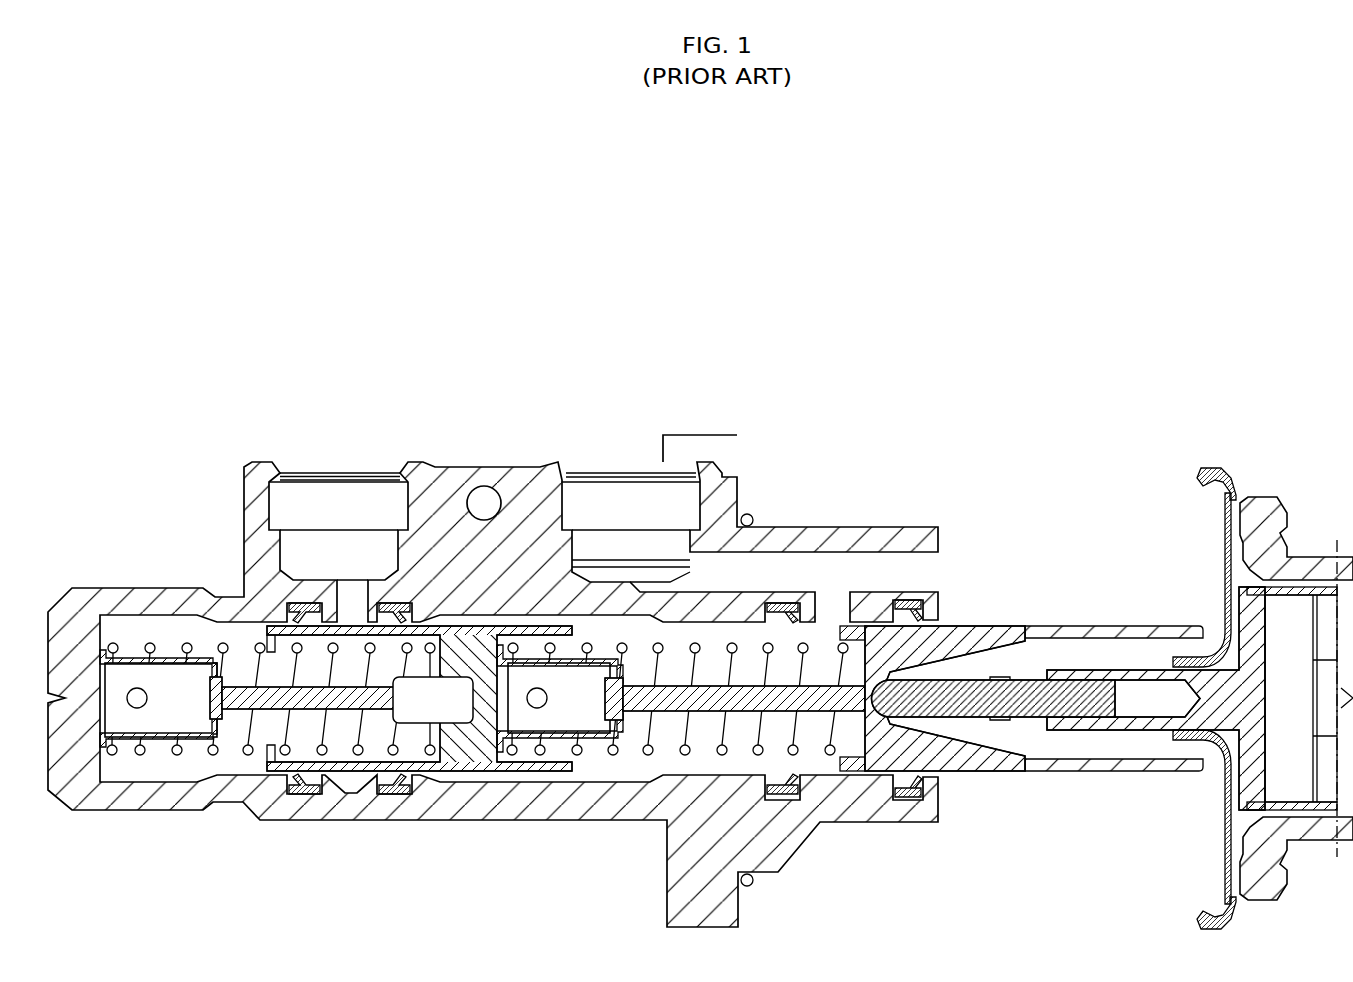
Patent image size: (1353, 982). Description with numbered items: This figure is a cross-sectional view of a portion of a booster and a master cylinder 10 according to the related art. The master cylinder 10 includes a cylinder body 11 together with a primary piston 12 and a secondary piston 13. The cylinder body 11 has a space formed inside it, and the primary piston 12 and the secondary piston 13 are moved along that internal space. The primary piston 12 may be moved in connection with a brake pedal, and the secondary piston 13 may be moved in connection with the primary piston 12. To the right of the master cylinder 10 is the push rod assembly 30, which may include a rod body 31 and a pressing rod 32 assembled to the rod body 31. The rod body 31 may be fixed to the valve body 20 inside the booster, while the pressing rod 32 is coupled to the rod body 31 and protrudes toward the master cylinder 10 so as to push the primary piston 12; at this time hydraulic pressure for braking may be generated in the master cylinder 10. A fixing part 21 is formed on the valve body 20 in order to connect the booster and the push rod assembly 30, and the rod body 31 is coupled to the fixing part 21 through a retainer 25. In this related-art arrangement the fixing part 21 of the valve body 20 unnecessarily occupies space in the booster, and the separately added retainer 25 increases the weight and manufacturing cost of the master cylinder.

The master cylinder 10 is at (164, 382).
The cylinder body 11 is at (527, 537).
The primary piston 12 is at (886, 745).
The secondary piston 13 is at (350, 772).
The valve body 20 is at (1323, 557).
The fixing part 21 is at (1205, 492).
The retainer 25 is at (1225, 560).
The push rod assembly 30 is at (1069, 764).
The rod body 31 is at (1197, 727).
The pressing rod 32 is at (973, 700).